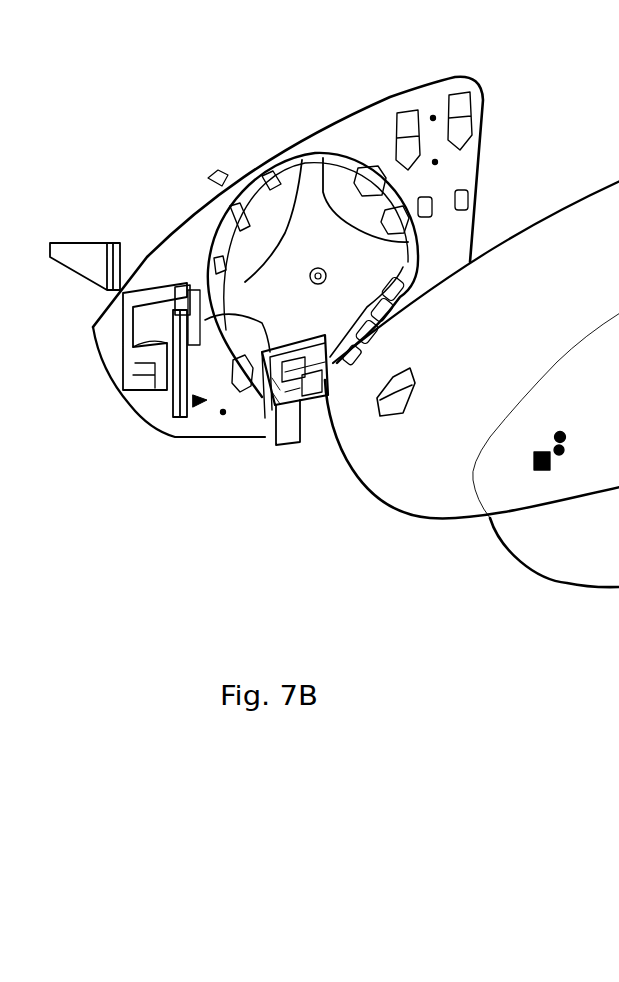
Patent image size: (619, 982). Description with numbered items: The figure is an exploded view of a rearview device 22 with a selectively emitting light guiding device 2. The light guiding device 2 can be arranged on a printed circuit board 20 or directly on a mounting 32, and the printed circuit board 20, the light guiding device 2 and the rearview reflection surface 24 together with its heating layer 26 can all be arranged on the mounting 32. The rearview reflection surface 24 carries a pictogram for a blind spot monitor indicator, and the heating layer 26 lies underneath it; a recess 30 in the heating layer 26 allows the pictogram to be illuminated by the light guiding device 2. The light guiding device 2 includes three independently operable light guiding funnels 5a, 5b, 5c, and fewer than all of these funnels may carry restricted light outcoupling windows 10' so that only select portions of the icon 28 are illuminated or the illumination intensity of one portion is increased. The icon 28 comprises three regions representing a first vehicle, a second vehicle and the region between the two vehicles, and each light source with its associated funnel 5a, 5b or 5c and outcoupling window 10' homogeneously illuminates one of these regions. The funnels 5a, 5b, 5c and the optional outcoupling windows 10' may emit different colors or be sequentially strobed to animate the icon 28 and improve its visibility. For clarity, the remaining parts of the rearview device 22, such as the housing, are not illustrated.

The light guiding device 2 is at (253, 397).
The light guiding funnel 5a is at (312, 347).
The light guiding funnel 5b is at (340, 380).
The light guiding funnel 5c is at (293, 460).
The restricted light outcoupling window 10' is at (294, 324).
The printed circuit board 20 is at (160, 400).
The rearview device 22 is at (580, 101).
The rearview reflection surface 24 is at (572, 562).
The heating layer 26 is at (417, 488).
The icon 28 is at (542, 473).
The recess 30 is at (390, 427).
The mounting 32 is at (192, 237).